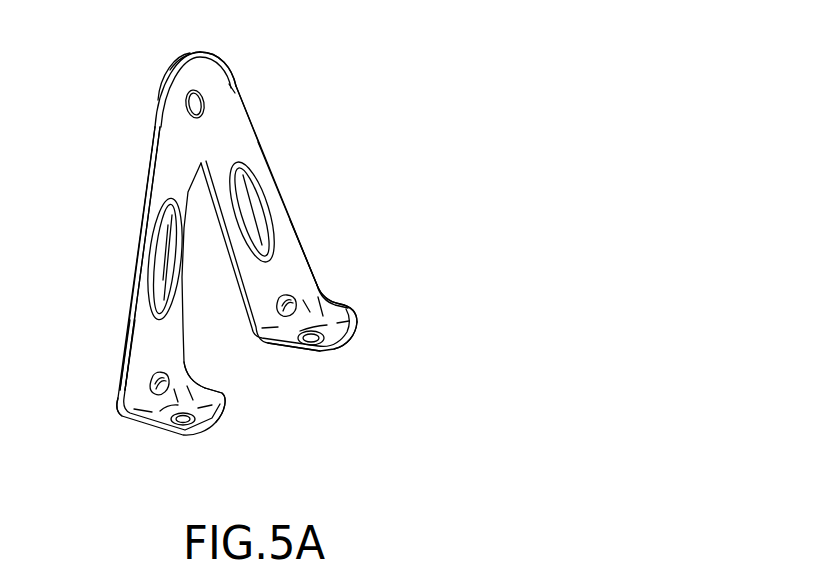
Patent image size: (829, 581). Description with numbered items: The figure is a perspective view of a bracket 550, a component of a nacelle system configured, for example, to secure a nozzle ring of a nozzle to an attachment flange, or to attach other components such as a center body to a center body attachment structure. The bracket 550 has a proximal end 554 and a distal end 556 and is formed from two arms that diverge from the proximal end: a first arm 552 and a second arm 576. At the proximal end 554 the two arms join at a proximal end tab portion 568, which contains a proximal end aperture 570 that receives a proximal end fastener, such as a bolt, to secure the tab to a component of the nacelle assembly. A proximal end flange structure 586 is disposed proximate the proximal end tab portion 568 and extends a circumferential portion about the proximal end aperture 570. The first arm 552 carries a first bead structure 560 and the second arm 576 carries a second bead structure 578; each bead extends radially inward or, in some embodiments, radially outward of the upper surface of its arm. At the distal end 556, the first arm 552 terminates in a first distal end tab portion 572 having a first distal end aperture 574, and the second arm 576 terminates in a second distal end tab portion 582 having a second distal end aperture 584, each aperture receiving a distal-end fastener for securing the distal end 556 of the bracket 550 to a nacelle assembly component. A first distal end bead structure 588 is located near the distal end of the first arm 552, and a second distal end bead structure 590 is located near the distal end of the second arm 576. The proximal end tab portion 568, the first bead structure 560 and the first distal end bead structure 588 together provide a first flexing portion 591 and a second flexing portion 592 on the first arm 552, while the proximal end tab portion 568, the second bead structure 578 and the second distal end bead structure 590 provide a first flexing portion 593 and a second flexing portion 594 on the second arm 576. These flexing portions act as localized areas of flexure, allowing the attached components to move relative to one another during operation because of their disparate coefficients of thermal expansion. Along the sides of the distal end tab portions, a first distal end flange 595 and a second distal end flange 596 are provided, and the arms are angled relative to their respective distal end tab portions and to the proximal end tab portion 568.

The bracket 550 is at (376, 68).
The first arm 552 is at (247, 150).
The proximal end 554 is at (208, 77).
The distal end 556 is at (325, 337).
The first bead structure 560 is at (250, 210).
The proximal end tab portion 568 is at (195, 72).
The proximal end aperture 570 is at (190, 106).
The first distal end tab portion 572 is at (348, 307).
The first distal end aperture 574 is at (318, 339).
The second arm 576 is at (165, 178).
The second bead structure 578 is at (163, 265).
The second distal end tab portion 582 is at (225, 394).
The second distal end aperture 584 is at (182, 434).
The proximal end flange structure 586 is at (172, 65).
The first distal end bead structure 588 is at (293, 302).
The second distal end bead structure 590 is at (148, 379).
The first flexing portion 591 is at (238, 140).
The second flexing portion 592 is at (285, 273).
The first flexing portion 593 is at (170, 155).
The second flexing portion 594 is at (158, 345).
The first distal end flange 595 is at (358, 317).
The second distal end flange 596 is at (205, 377).